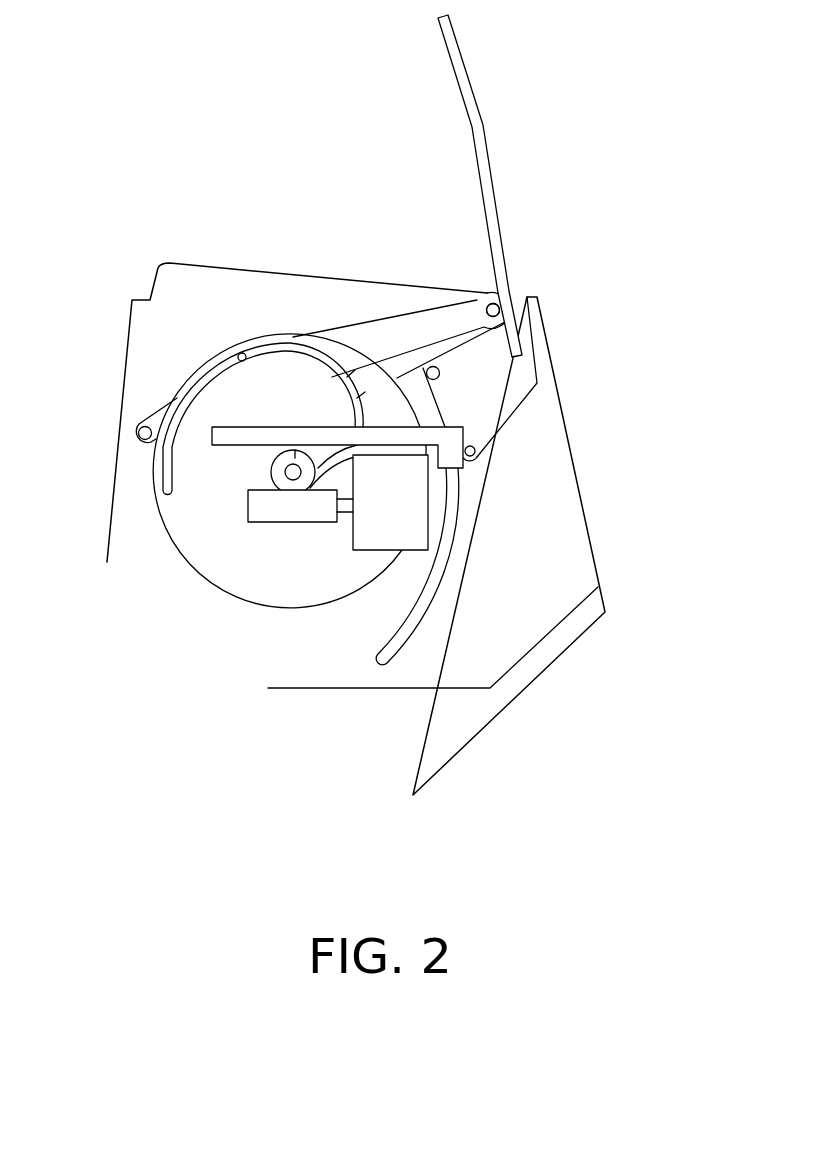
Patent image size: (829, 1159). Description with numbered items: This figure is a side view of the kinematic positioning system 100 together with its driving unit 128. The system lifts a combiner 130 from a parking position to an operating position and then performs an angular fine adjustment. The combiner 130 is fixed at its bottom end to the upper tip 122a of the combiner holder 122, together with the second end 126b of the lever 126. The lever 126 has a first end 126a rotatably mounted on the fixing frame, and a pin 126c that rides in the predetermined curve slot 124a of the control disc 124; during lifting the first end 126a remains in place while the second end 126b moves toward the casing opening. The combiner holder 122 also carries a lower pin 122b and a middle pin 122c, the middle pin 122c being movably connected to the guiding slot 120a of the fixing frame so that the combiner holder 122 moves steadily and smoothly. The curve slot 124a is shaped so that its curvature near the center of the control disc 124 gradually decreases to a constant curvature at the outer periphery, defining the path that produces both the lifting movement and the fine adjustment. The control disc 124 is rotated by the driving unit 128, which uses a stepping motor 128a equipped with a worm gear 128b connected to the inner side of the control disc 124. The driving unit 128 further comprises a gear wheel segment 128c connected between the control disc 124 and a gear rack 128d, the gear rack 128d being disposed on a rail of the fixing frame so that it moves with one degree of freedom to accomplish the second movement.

The positioning system 100 is at (694, 815).
The guiding slot 120a is at (412, 633).
The combiner holder 122 is at (527, 347).
The upper tip 122a is at (511, 308).
The lower pin 122b is at (480, 452).
The middle pin 122c is at (441, 374).
The control disc 124 is at (308, 583).
The predetermined curve slot 124a is at (367, 390).
The lever 126 is at (397, 327).
The first end 126a is at (137, 434).
The second end 126b is at (503, 302).
The pin 126c is at (243, 352).
The driving unit 128 is at (430, 500).
The stepping motor 128a is at (413, 533).
The worm gear 128b is at (268, 512).
The gear wheel segment 128c is at (277, 473).
The gear rack 128d is at (229, 440).
The combiner 130 is at (475, 127).